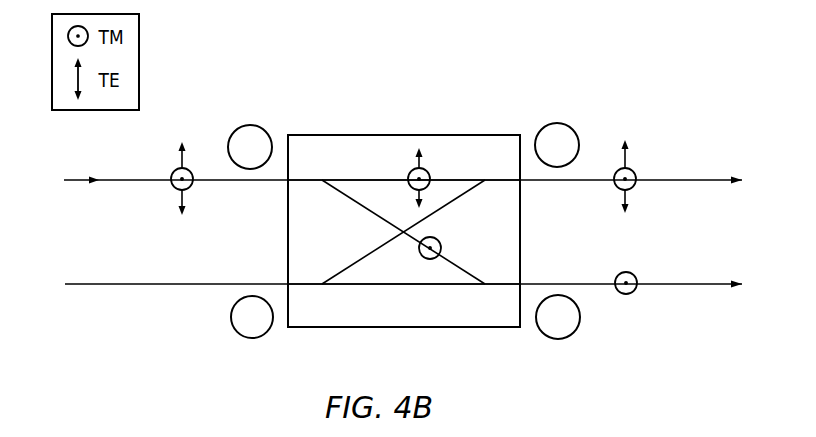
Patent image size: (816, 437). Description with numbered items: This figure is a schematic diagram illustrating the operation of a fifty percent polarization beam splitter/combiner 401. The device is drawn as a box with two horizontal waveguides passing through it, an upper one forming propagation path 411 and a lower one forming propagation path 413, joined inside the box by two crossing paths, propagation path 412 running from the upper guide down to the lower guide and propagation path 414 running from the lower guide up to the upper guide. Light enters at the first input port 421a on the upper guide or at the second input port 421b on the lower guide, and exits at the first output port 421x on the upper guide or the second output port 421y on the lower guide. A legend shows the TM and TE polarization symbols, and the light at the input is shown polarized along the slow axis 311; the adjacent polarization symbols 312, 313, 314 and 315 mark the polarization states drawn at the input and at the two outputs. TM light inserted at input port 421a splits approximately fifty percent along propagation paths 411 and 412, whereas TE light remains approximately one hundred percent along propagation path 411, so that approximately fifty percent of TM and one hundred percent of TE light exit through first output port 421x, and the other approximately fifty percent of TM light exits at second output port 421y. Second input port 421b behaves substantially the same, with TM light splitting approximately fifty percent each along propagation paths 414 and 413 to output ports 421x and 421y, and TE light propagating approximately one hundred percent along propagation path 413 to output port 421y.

The slow axis 311 is at (178, 170).
The input TM polarization component 312 is at (172, 188).
The output TM polarization component at port X 313 is at (635, 188).
The output TE polarization component at port X 314 is at (630, 165).
The output TM polarization component at port Y 315 is at (627, 294).
The 50 percent polarization beam splitter/combiner 401 is at (445, 135).
The propagation path 411 is at (379, 179).
The propagation path 412 is at (351, 199).
The propagation path 413 is at (377, 284).
The propagation path 414 is at (460, 197).
The first input port 421a is at (250, 125).
The second input port 421b is at (253, 338).
The first output port 421x is at (555, 123).
The second output port 421y is at (558, 339).